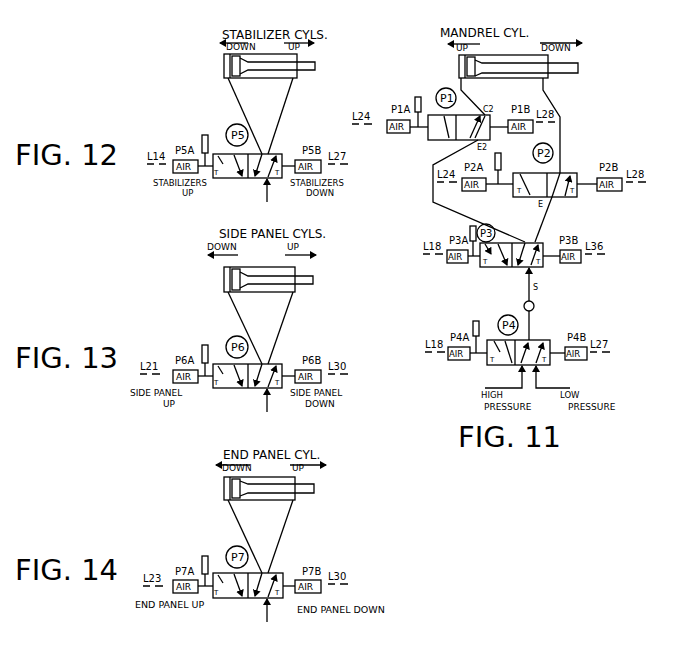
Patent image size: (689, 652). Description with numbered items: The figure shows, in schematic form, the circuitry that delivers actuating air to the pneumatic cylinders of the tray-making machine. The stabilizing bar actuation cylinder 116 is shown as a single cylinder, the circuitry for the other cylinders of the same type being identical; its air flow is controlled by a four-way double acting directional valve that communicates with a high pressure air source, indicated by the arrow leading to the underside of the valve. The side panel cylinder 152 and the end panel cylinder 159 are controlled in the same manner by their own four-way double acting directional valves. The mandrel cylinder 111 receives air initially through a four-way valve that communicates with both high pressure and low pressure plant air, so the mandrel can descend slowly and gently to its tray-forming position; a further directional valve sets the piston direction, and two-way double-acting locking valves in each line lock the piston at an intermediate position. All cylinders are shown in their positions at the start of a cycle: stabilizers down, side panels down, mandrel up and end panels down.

In FIG. 11, the mandrel cylinder 111 is at (548, 78).
In FIG. 12, the stabilizing bar actuation cylinder 116 is at (297, 78).
In FIG. 13, the side panel cylinder 152 is at (295, 292).
In FIG. 14, the end panel cylinder 159 is at (295, 500).